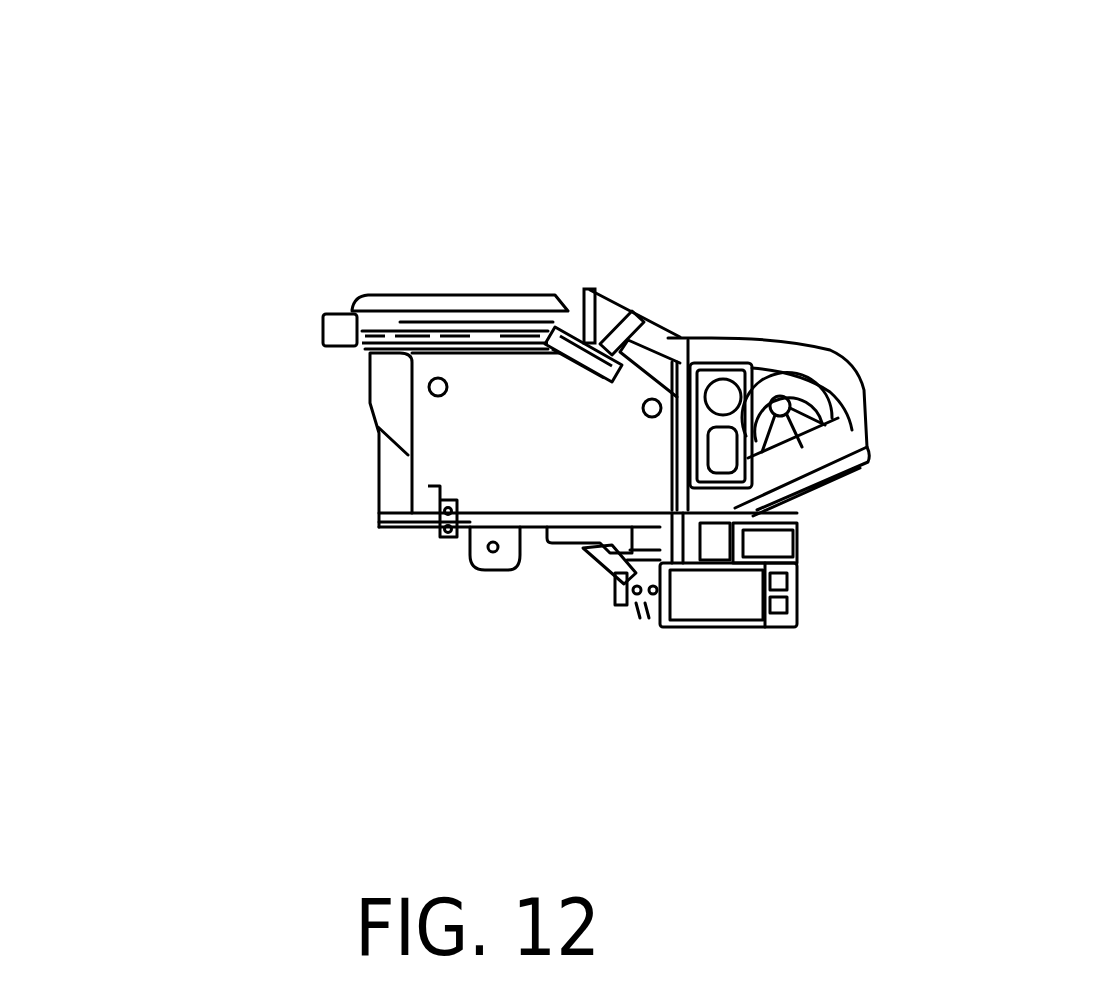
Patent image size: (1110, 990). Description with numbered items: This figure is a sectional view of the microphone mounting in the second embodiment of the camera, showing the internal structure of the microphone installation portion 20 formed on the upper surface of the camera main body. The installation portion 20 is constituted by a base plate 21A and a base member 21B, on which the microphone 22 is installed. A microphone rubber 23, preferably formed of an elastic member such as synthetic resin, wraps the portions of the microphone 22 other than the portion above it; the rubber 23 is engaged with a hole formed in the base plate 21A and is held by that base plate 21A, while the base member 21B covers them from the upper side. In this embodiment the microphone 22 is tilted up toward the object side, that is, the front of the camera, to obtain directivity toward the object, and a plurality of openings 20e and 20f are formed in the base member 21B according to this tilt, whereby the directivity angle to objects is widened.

The microphone installation portion 20 is at (378, 299).
The opening 20e is at (578, 300).
The opening 20f is at (631, 314).
The base plate 21A is at (430, 490).
The base member 21B is at (322, 327).
The microphone 22 is at (558, 312).
The microphone rubber 23 is at (508, 316).